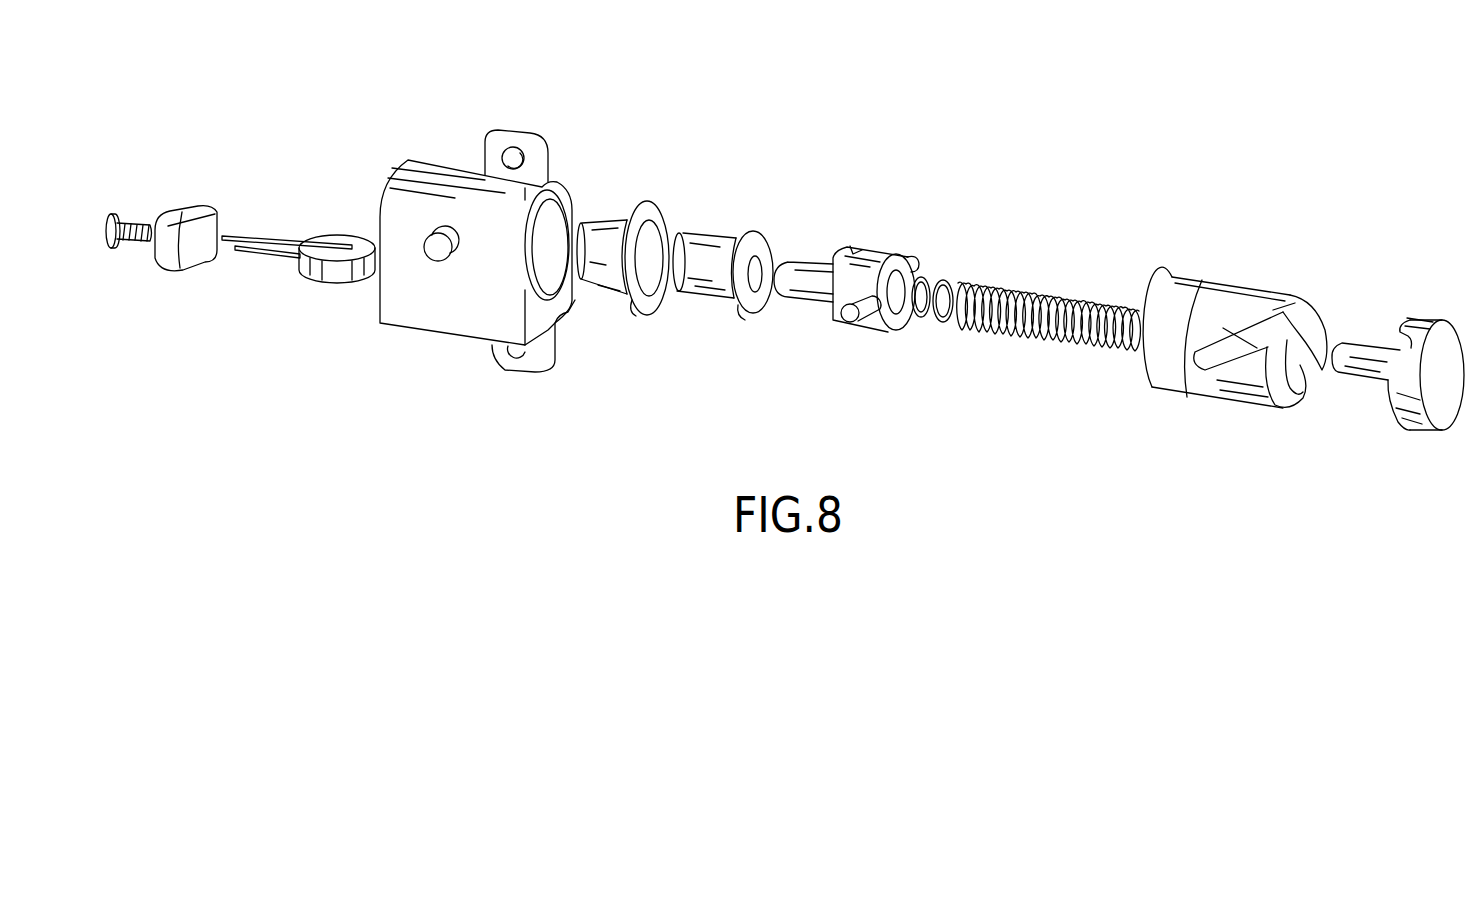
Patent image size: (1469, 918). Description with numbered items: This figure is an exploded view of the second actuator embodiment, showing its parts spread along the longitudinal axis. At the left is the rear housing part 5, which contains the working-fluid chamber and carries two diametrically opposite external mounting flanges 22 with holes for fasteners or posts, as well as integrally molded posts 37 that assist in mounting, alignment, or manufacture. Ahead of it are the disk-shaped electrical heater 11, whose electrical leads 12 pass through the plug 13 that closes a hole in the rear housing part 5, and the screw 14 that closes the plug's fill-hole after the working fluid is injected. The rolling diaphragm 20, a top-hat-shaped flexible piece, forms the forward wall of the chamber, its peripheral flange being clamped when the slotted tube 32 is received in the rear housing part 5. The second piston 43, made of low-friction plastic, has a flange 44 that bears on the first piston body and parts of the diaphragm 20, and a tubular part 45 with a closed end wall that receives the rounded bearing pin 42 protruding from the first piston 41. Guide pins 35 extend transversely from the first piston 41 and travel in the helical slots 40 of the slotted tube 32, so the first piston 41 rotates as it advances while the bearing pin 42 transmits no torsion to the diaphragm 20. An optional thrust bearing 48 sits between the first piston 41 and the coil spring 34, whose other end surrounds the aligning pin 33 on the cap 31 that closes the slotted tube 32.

The rear housing part 5 is at (500, 246).
The electrical heater 11 is at (331, 283).
The electrical leads 12 is at (270, 246).
The plug 13 is at (190, 215).
The screw 14 is at (122, 213).
The rolling diaphragm 20 is at (613, 221).
The external mounting flanges 22 is at (548, 140).
The cap 31 is at (1408, 428).
The slotted tube 32 is at (1246, 298).
The aligning pin 33 is at (1373, 341).
The coil spring 34 is at (1057, 295).
The guide pins 35 is at (917, 261).
The integrally molded posts 37 is at (437, 250).
The helical slots 40 is at (1260, 308).
The first piston 41 is at (898, 286).
The bearing pin 42 is at (801, 262).
The second piston 43 is at (714, 246).
The flange 44 is at (750, 303).
The tubular part 45 is at (705, 296).
The thrust bearing 48 is at (953, 327).